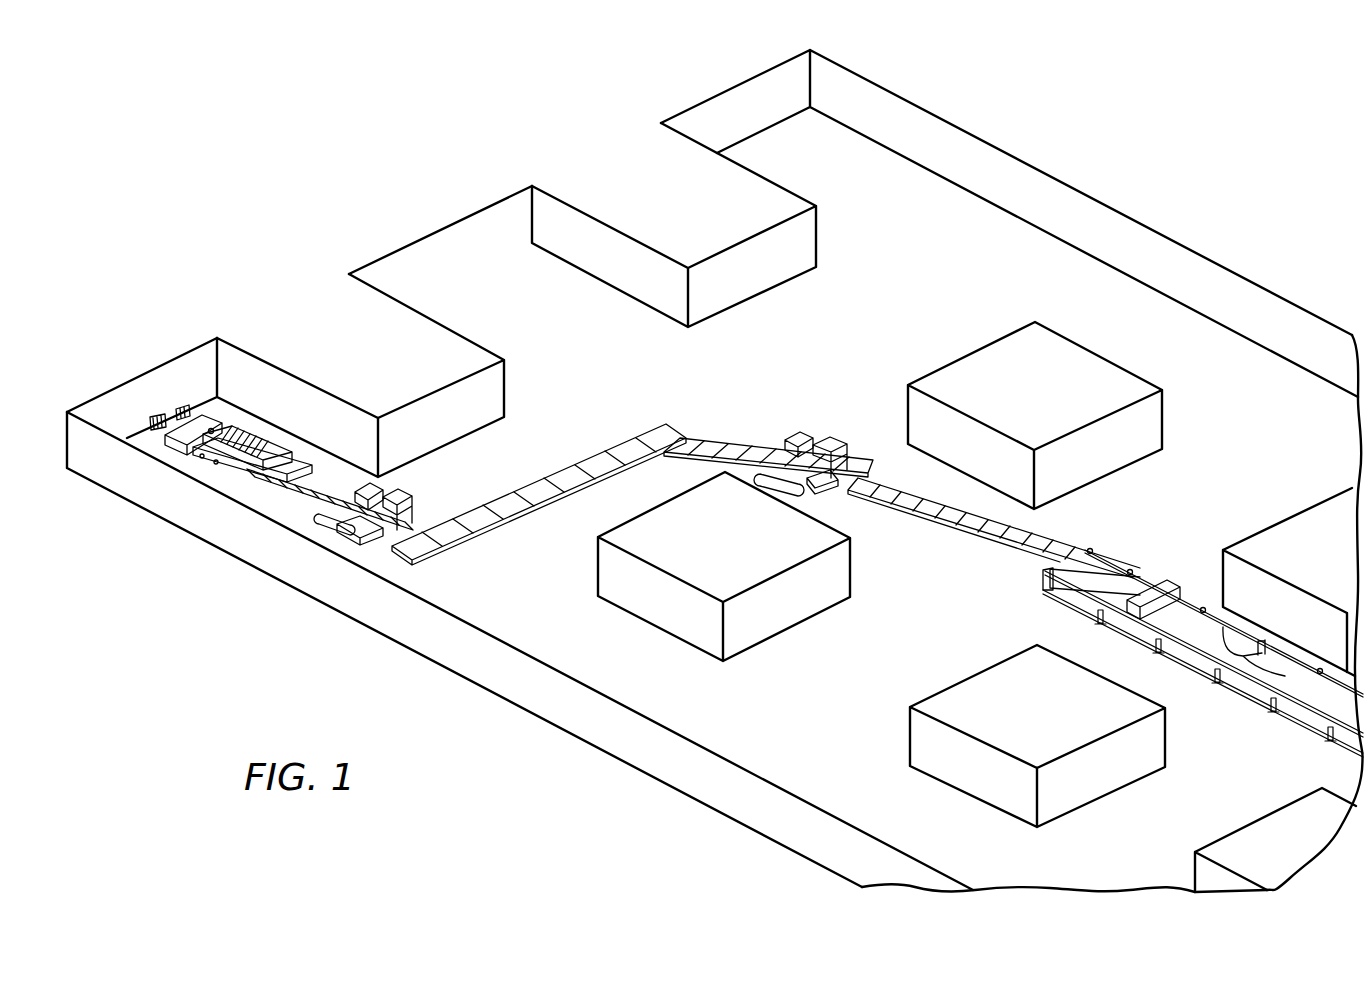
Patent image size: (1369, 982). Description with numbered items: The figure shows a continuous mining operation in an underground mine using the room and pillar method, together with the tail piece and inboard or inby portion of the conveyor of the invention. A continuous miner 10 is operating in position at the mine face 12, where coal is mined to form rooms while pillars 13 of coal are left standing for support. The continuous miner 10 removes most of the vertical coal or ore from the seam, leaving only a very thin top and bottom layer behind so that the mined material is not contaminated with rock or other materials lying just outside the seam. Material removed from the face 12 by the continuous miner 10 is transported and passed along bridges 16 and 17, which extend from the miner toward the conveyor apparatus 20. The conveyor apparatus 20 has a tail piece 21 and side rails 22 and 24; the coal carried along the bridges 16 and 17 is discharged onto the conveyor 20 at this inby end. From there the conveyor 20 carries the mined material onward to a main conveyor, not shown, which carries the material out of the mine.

The continuous miner 10 is at (208, 413).
The mine face 12 is at (175, 362).
The pillars 13 is at (905, 390).
The bridge 16 is at (413, 498).
The bridge 17 is at (612, 450).
The conveyor apparatus 20 is at (1293, 737).
The tail piece 21 is at (1047, 612).
The side rail 22 is at (1242, 687).
The side rail 24 is at (1237, 637).